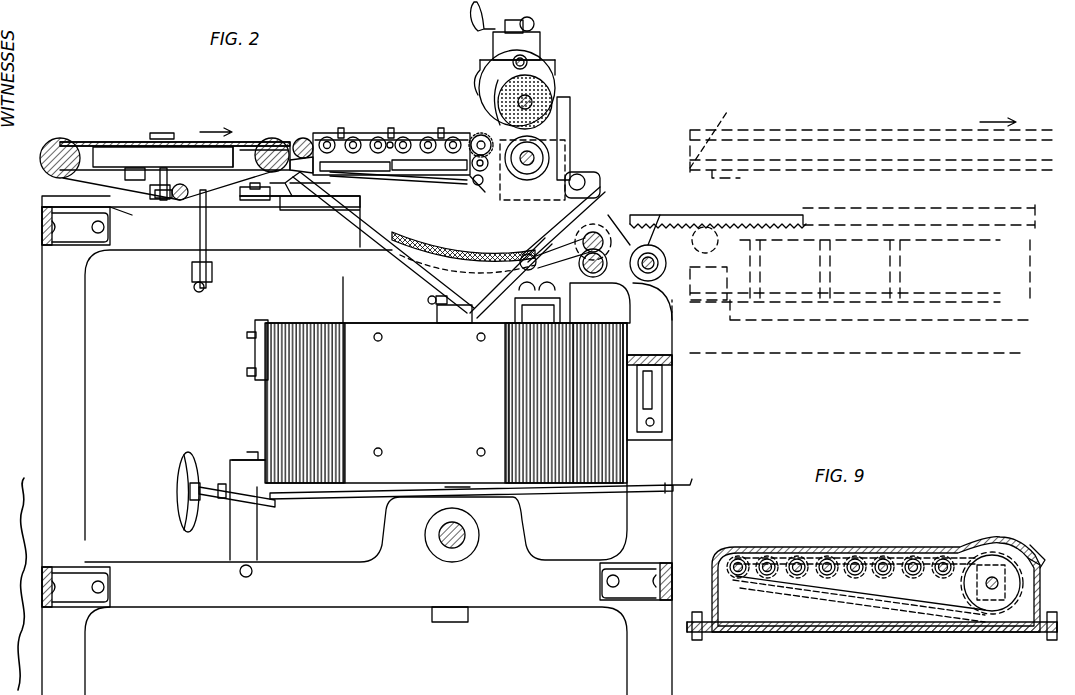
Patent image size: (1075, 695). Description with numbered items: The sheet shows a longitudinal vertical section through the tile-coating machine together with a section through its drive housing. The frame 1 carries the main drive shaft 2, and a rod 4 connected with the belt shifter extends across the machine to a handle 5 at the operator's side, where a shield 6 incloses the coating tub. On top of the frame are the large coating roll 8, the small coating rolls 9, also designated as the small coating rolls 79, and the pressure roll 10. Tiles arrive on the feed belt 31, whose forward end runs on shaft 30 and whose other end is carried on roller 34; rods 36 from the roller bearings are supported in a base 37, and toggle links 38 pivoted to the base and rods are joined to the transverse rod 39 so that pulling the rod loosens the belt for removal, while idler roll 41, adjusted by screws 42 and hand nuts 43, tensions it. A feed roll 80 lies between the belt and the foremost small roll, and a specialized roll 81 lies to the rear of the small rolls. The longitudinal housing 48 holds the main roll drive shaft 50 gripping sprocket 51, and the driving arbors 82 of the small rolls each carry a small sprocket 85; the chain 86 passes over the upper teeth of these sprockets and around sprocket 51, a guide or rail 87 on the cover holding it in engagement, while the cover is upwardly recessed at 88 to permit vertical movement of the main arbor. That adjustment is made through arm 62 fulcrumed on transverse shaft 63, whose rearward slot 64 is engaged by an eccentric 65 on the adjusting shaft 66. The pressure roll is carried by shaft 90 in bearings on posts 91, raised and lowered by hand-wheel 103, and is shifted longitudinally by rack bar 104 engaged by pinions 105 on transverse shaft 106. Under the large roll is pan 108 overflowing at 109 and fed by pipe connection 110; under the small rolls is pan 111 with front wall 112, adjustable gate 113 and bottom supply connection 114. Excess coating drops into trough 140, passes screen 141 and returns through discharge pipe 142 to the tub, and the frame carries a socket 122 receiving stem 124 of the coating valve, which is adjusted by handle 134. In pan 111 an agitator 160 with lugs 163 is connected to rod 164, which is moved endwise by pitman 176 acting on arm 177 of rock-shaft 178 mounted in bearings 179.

In FIG. 2, the frame 1 is at (42, 352).
In FIG. 2, the main drive shaft 2 is at (452, 548).
In FIG. 2, the rod 4 is at (278, 503).
In FIG. 2, the handle 5 is at (182, 478).
In FIG. 2, the shield 6 is at (347, 323).
In FIG. 2, the large coating roll 8 is at (585, 135).
In FIG. 2, the small coating rolls 9 is at (408, 140).
In FIG. 2, the pressure roll 10 is at (560, 110).
In FIG. 2, the shaft 30 is at (40, 160).
In FIG. 2, the feed belt 31 is at (85, 142).
In FIG. 2, the roller 34 is at (270, 140).
In FIG. 2, the rods 36 is at (240, 148).
In FIG. 2, the base 37 is at (195, 150).
In FIG. 2, the toggle links 38 is at (135, 166).
In FIG. 2, the transverse rod 39 is at (132, 215).
In FIG. 2, the idler roll 41 is at (176, 202).
In FIG. 2, the screws 42 is at (165, 168).
In FIG. 2, the hand nuts 43 is at (160, 132).
In FIG. 9, the longitudinal housing 48 is at (752, 547).
In FIG. 9, the main roll drive shaft 50 is at (990, 592).
In FIG. 9, the sprocket 51 is at (990, 565).
In FIG. 2, the arm 62 is at (605, 238).
In FIG. 2, the transverse shaft 63 is at (593, 276).
In FIG. 2, the slots 64 is at (652, 245).
In FIG. 2, the eccentrics 65 is at (660, 270).
In FIG. 2, the adjusting shaft 66 is at (646, 270).
In FIG. 2, the small coating rolls 79 is at (355, 134).
In FIG. 2, the feed roll 80 is at (306, 136).
In FIG. 2, the specialized roll 81 is at (478, 152).
In FIG. 9, the driving arbors 82 is at (825, 557).
In FIG. 9, the small sprocket 85 is at (872, 592).
In FIG. 9, the chain 86 is at (915, 605).
In FIG. 9, the guide or rail 87 is at (898, 558).
In FIG. 9, the recess 88 is at (1020, 552).
In FIG. 2, the pressure roll shaft 90 is at (550, 90).
In FIG. 2, the posts 91 is at (515, 26).
In FIG. 2, the hand-wheel 103 is at (472, 18).
In FIG. 2, the rack bar 104 is at (775, 214).
In FIG. 2, the pinions 105 is at (724, 137).
In FIG. 2, the transverse shaft 106 is at (690, 130).
In FIG. 2, the pan 108 is at (520, 182).
In FIG. 2, the overflow 109 is at (480, 190).
In FIG. 2, the pipe connection 110 is at (585, 172).
In FIG. 2, the pan 111 is at (375, 170).
In FIG. 2, the front wall 112 is at (330, 136).
In FIG. 2, the adjustable gate 113 is at (474, 140).
In FIG. 2, the connection 114 is at (450, 185).
In FIG. 2, the socket 122 is at (522, 296).
In FIG. 2, the stem 124 is at (497, 338).
In FIG. 2, the handle 134 is at (430, 300).
In FIG. 2, the trough 140 is at (350, 210).
In FIG. 2, the screen 141 is at (400, 252).
In FIG. 2, the discharge pipe 142 is at (465, 316).
In FIG. 2, the agitator 160 is at (345, 228).
In FIG. 2, the short lugs 163 is at (395, 180).
In FIG. 2, the rod 164 is at (378, 136).
In FIG. 2, the pitman 176 is at (200, 292).
In FIG. 2, the arm 177 is at (198, 255).
In FIG. 2, the rock-shaft 178 is at (250, 203).
In FIG. 2, the bearings 179 is at (214, 222).